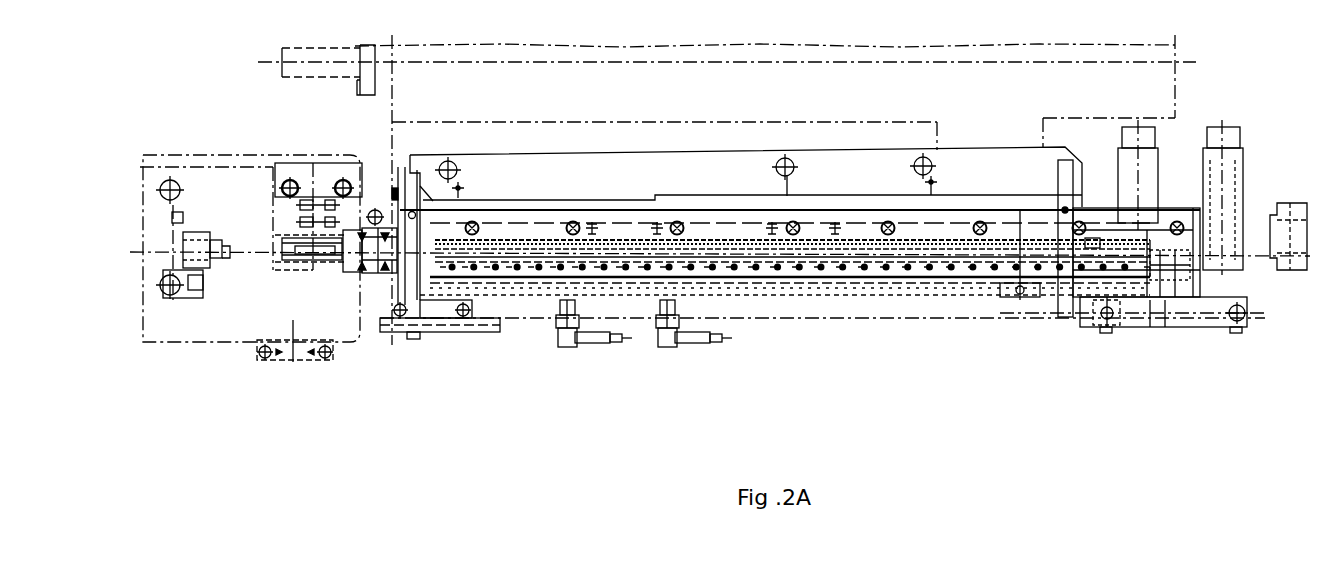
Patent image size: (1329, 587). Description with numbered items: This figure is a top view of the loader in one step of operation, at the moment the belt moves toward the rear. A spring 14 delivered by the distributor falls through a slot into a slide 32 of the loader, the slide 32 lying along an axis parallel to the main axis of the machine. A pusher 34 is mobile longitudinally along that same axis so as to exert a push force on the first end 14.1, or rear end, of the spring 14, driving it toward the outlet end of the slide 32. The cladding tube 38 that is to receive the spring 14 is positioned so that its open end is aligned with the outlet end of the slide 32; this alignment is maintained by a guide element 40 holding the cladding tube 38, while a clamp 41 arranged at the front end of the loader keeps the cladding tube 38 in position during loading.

The spring 14 is at (898, 237).
The first end of the spring 14.1 is at (1020, 300).
The slide 32 is at (805, 250).
The pusher 34 is at (1172, 297).
The cladding tube 38 is at (268, 258).
The guide element 40 is at (373, 273).
The clamp 41 is at (190, 285).